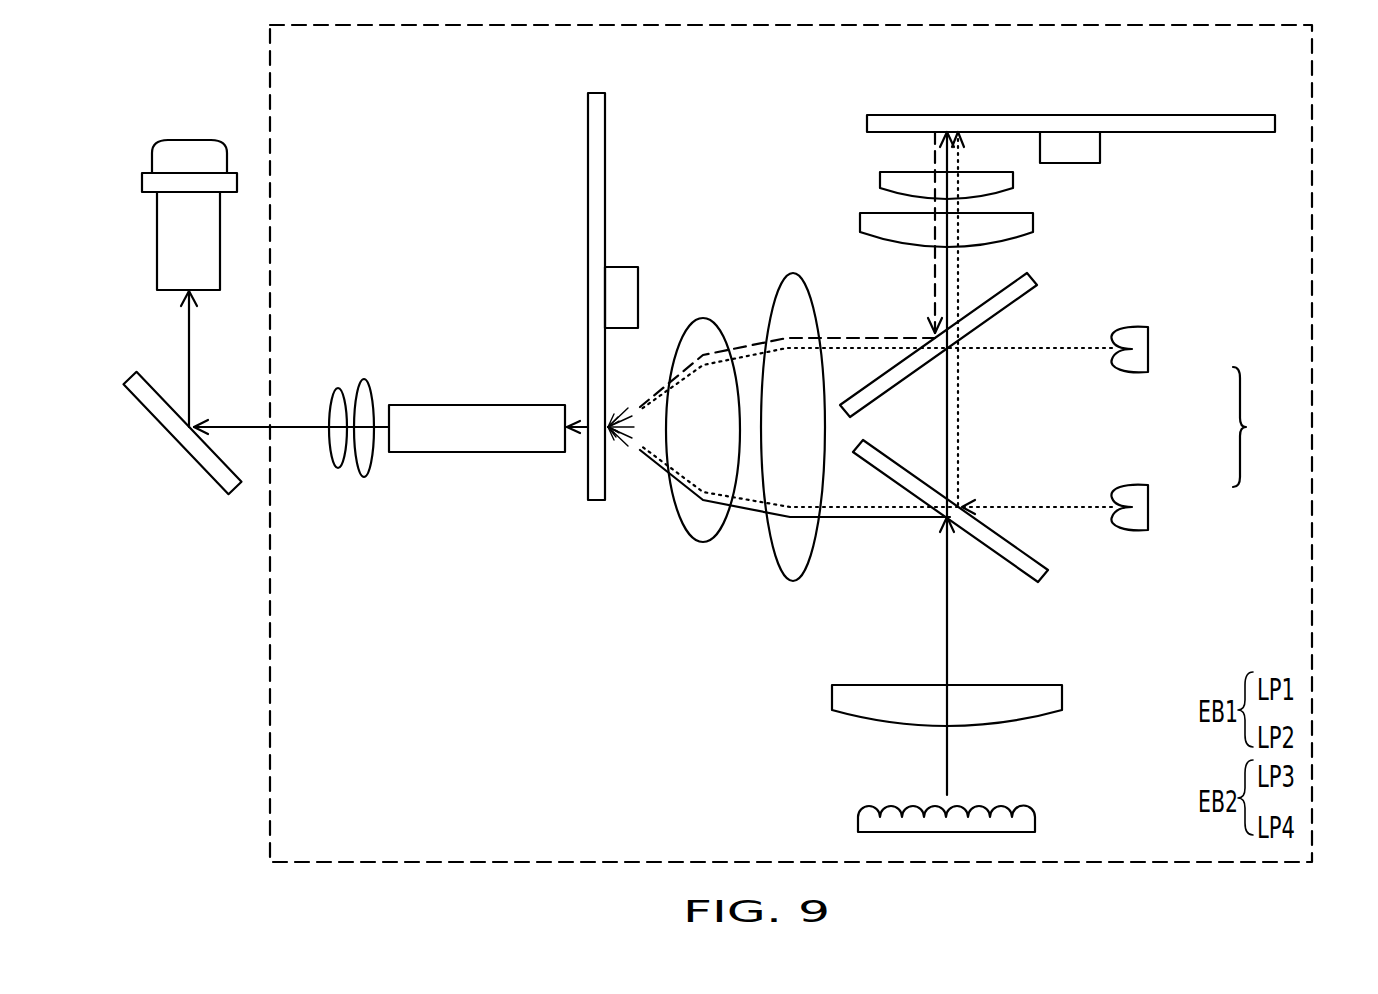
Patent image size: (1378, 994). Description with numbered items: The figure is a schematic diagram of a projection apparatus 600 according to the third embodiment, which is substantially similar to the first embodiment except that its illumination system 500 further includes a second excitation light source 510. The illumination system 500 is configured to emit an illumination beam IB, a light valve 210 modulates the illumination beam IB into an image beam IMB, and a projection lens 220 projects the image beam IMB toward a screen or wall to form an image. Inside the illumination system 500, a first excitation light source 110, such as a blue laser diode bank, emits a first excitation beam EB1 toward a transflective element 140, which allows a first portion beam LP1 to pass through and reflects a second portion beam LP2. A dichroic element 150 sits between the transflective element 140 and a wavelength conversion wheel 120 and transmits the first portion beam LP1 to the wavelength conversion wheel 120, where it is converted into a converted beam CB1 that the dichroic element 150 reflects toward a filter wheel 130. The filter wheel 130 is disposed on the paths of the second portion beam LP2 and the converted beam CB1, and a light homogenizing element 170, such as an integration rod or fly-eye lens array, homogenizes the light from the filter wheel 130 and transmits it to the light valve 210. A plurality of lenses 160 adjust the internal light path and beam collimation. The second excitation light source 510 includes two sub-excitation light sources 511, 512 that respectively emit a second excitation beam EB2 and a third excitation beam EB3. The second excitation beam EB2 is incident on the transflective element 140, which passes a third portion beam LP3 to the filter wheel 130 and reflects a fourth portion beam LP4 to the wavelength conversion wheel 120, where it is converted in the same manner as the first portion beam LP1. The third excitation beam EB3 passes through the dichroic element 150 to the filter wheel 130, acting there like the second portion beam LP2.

The first excitation light source 110 is at (855, 818).
The wavelength conversion wheel 120 is at (1210, 118).
The filter wheel 130 is at (598, 98).
The transflective element 140 is at (1045, 570).
The dichroic element 150 is at (1013, 297).
The lenses 160 is at (338, 390).
The light homogenizing element 170 is at (470, 455).
The light valve 210 is at (203, 457).
The projection lens 220 is at (177, 155).
The illumination system 500 is at (268, 785).
The second excitation light source 510 is at (1261, 427).
The sub-excitation light source 511 is at (1140, 507).
The sub-excitation light source 512 is at (1140, 350).
The projection apparatus 600 is at (1367, 897).
The illumination beam IB is at (297, 430).
The image beam IMB is at (189, 340).
The converted beam CB1 is at (935, 152).
The first portion beam LP1 is at (945, 420).
The second portion beam LP2 is at (885, 520).
The third portion beam LP3 is at (905, 503).
The fourth portion beam LP4 is at (960, 425).
The first excitation beam EB1 is at (945, 752).
The second excitation beam EB2 is at (1042, 510).
The third excitation beam EB3 is at (1017, 355).